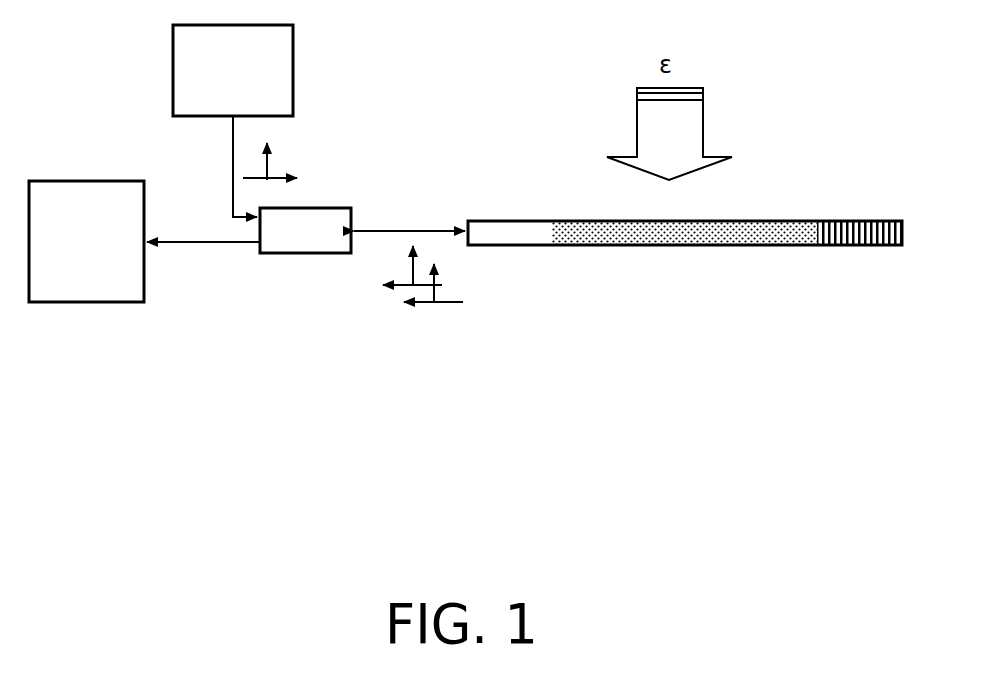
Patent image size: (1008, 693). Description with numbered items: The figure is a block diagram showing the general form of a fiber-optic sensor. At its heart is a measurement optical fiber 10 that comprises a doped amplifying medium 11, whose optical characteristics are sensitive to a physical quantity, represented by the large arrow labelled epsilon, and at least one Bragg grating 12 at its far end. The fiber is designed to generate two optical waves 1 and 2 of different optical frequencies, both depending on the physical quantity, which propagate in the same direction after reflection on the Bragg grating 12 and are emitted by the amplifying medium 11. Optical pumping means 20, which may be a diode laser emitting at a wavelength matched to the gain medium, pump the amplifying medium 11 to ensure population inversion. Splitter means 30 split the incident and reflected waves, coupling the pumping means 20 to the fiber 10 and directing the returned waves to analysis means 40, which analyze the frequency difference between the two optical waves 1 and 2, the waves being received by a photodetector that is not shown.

The optical pumping means 20 is at (283, 72).
The splitter means 30 is at (293, 247).
The analysis means 40 is at (89, 295).
The measurement optical fiber 10 is at (522, 247).
The doped amplifying medium 11 is at (630, 233).
The Bragg grating 12 is at (835, 248).
The first optical wave 1 is at (387, 290).
The second optical wave 2 is at (450, 303).